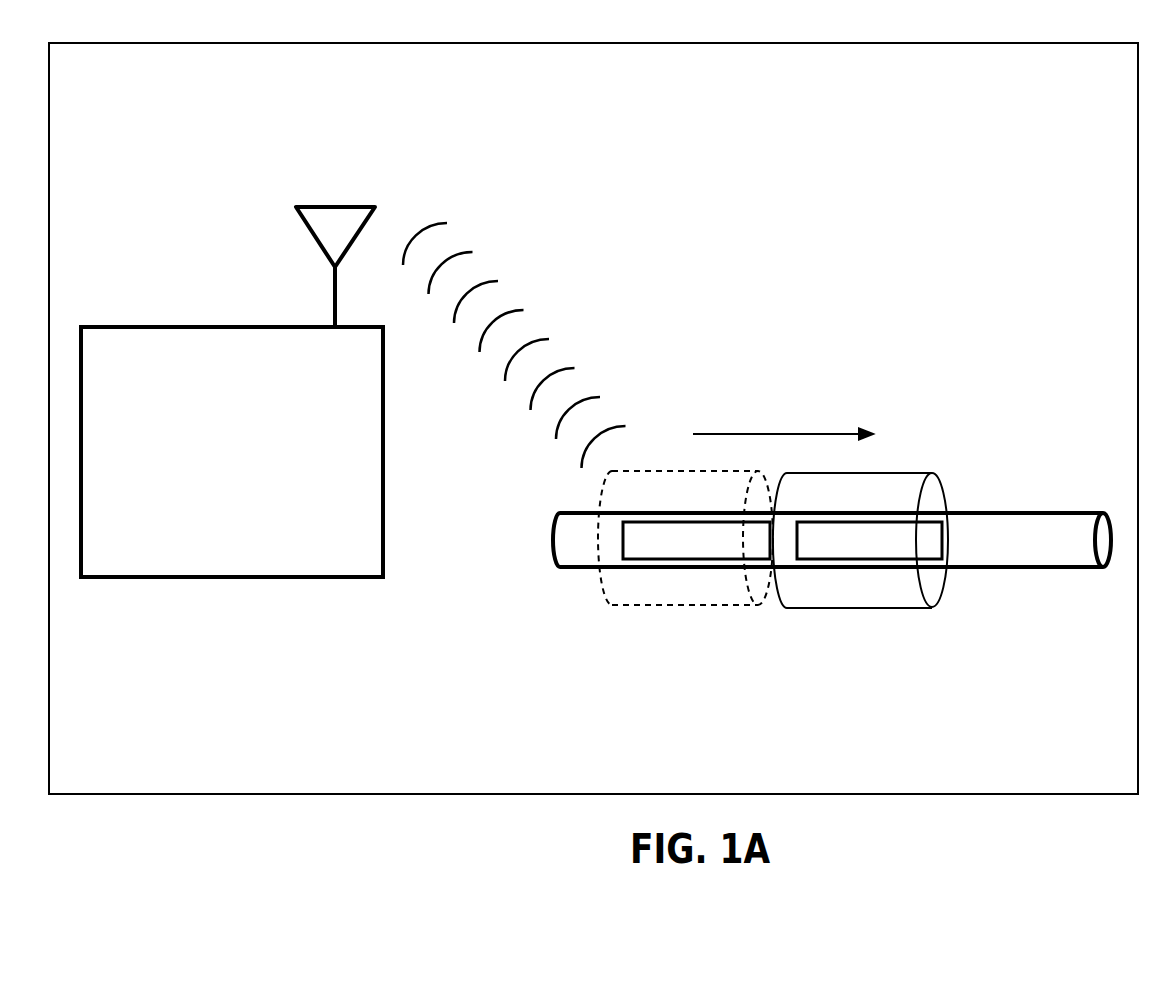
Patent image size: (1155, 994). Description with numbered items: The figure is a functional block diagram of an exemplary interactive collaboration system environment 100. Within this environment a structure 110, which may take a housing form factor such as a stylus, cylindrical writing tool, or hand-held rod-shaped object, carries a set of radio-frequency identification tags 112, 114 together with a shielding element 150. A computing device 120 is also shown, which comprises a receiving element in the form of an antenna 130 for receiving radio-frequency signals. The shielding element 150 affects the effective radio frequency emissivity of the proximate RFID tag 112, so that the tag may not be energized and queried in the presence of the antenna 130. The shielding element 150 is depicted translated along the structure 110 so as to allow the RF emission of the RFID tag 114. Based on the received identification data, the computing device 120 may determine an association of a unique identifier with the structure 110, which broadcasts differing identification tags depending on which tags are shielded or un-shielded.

The interactive collaboration system environment 100 is at (1012, 189).
The structure 110 is at (1008, 510).
The RFID tag 112 is at (678, 552).
The RFID tag 114 is at (853, 550).
The computing device 120 is at (345, 550).
The antenna 130 is at (313, 238).
The shielding element 150 is at (833, 609).